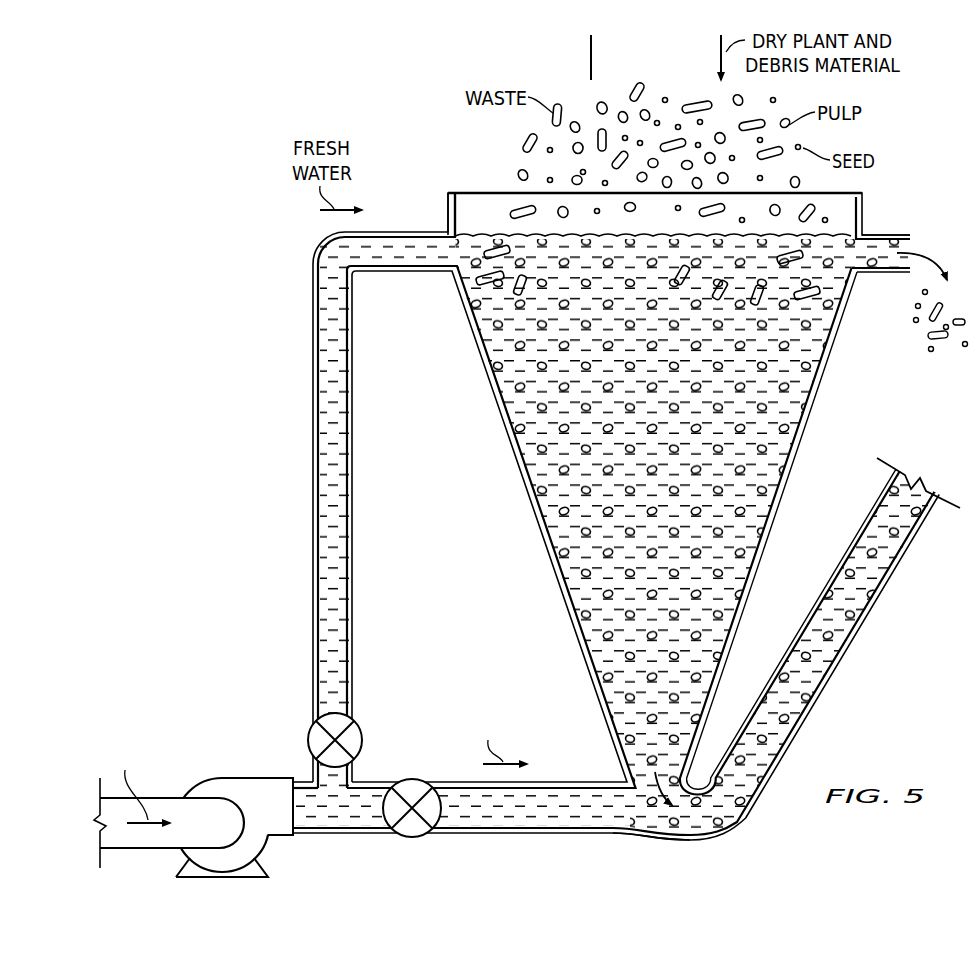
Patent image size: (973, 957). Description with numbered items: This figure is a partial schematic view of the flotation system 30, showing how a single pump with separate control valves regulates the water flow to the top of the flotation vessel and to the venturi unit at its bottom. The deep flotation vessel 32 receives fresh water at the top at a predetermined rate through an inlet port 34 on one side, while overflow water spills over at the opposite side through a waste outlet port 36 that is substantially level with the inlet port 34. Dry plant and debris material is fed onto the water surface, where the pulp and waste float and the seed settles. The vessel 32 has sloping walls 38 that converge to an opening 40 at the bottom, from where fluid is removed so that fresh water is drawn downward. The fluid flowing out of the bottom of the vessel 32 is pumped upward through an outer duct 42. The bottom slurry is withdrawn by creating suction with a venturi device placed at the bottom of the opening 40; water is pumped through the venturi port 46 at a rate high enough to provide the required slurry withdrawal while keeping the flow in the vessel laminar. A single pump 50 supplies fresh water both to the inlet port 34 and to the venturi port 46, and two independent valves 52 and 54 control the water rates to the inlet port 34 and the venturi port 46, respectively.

The flotation system 30 is at (266, 212).
The flotation vessel 32 is at (512, 466).
The inlet port 34 is at (427, 230).
The waste outlet port 36 is at (884, 233).
The sloping walls 38 is at (548, 556).
The opening 40 is at (643, 770).
The outer duct 42 is at (897, 574).
The venturi port 46 is at (652, 810).
The pump 50 is at (222, 778).
The valve 52 is at (308, 741).
The valve 54 is at (412, 777).